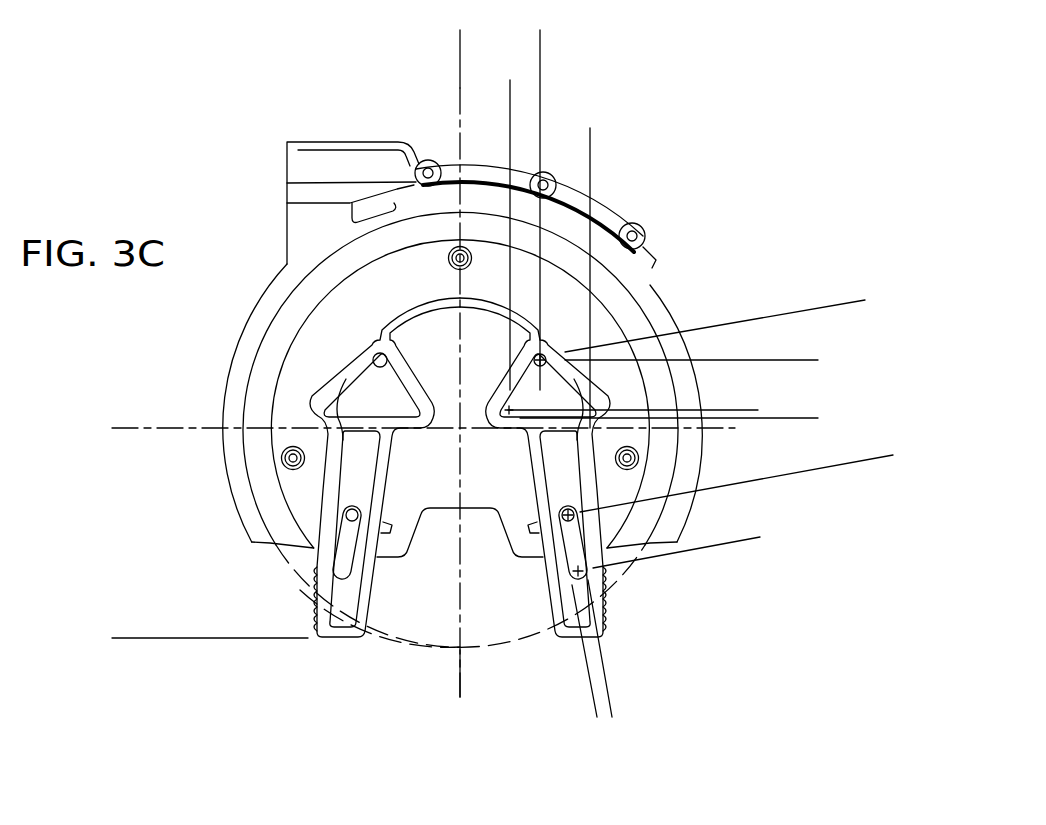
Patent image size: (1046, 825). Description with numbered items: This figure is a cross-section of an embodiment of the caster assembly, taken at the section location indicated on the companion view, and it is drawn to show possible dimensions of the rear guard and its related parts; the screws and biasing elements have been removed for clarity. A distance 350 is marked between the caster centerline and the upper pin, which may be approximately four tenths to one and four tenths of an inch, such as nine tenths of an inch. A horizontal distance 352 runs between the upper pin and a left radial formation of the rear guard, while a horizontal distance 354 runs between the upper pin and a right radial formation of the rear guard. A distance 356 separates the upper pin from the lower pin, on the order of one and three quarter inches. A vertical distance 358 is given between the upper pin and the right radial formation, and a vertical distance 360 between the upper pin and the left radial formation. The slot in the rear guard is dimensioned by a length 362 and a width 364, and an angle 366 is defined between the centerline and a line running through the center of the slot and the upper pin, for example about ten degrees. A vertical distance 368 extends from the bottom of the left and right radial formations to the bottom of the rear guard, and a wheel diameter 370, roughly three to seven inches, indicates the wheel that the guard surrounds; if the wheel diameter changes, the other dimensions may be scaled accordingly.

The distance between centerline and upper pin 350 is at (413, 39).
The horizontal distance between upper pin and left radial formation 352 is at (485, 92).
The horizontal distance between upper pin and right radial formation 354 is at (515, 140).
The distance between upper pin and lower pin 356 is at (865, 300).
The vertical distance between upper pin and right radial formation 358 is at (810, 318).
The vertical distance between upper pin and left radial formation 360 is at (750, 312).
The length of slot 362 is at (735, 438).
The width of slot 364 is at (594, 705).
The angle between centerline and slot line 366 is at (588, 672).
The vertical distance between radial formations and bottom of rear guard 368 is at (120, 428).
The wheel diameter 370 is at (385, 640).